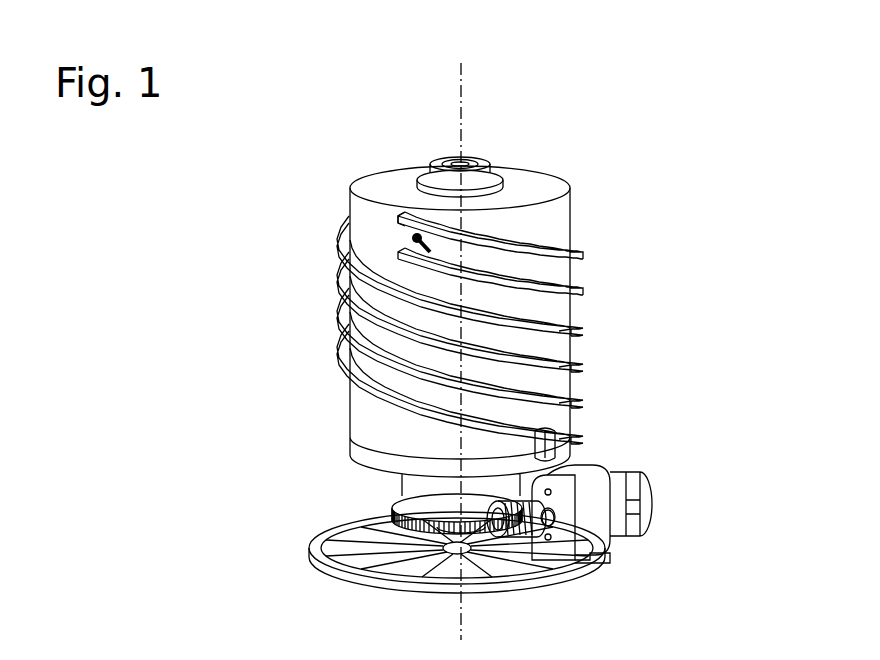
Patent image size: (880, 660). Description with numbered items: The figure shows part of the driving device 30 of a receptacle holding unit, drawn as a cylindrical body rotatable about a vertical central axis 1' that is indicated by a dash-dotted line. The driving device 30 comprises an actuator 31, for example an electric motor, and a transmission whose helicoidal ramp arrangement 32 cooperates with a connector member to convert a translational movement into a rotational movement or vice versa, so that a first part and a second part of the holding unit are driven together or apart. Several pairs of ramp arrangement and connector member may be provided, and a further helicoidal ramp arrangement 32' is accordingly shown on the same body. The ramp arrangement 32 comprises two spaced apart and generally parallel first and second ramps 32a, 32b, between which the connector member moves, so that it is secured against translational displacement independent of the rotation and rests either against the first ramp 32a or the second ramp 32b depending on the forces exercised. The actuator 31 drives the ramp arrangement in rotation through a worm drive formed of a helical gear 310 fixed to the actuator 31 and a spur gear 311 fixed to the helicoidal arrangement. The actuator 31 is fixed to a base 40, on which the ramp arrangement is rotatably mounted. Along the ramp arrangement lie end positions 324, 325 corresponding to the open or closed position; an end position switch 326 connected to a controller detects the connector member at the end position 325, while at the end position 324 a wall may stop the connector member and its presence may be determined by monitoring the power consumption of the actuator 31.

The driving device 30 is at (656, 85).
The central axis 1' is at (492, 344).
The actuator 31 is at (637, 487).
The helical gear 310 is at (530, 536).
The spur gear 311 is at (410, 520).
The helicoidal ramp arrangement 32 is at (511, 294).
The helicoidal ramp arrangement 32' is at (415, 366).
The first ramp 32a is at (582, 252).
The second ramp 32b is at (585, 283).
The end position 324 is at (545, 446).
The end position 325 is at (407, 233).
The end position switch 326 is at (412, 238).
The base 40 is at (323, 545).